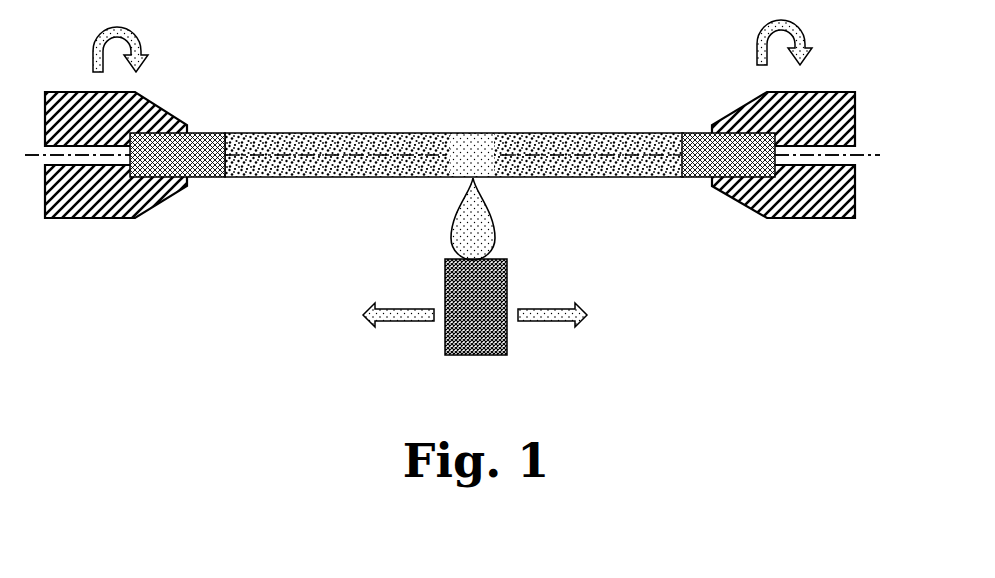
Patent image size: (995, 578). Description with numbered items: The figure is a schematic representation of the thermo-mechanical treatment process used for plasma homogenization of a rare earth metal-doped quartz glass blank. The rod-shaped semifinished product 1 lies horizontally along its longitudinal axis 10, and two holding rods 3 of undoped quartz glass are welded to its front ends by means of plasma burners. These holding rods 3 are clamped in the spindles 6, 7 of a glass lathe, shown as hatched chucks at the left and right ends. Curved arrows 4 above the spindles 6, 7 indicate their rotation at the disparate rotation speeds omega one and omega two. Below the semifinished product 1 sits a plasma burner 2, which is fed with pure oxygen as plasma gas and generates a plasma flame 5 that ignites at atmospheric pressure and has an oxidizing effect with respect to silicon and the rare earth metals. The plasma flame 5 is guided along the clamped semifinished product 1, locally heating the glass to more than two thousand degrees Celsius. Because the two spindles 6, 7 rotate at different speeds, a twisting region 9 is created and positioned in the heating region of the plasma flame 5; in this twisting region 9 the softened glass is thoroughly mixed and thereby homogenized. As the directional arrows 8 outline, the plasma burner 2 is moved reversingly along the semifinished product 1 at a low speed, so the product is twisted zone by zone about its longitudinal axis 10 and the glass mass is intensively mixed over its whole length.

The rod-shaped semifinished product 1 is at (315, 135).
The plasma burner 2 is at (462, 346).
The holding rod 3 is at (200, 165).
The rotation direction arrow 4 is at (140, 47).
The plasma flame 5 is at (485, 233).
The spindle 6 is at (123, 197).
The spindle 7 is at (804, 195).
The directional arrow 8 is at (399, 318).
The twisting region 9 is at (463, 134).
The longitudinal axis 10 is at (867, 158).